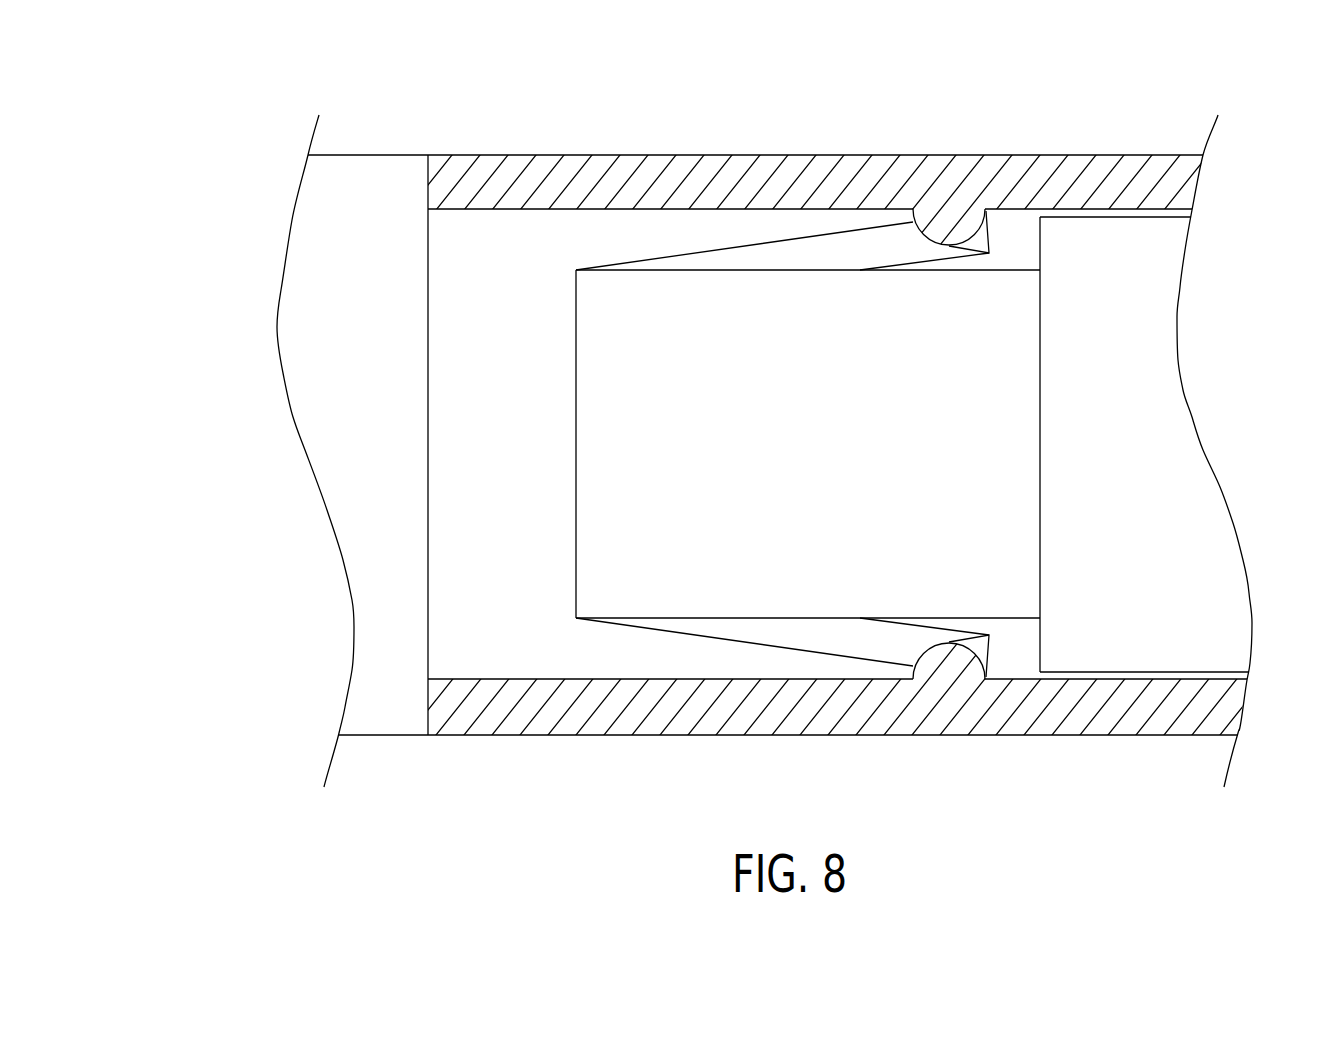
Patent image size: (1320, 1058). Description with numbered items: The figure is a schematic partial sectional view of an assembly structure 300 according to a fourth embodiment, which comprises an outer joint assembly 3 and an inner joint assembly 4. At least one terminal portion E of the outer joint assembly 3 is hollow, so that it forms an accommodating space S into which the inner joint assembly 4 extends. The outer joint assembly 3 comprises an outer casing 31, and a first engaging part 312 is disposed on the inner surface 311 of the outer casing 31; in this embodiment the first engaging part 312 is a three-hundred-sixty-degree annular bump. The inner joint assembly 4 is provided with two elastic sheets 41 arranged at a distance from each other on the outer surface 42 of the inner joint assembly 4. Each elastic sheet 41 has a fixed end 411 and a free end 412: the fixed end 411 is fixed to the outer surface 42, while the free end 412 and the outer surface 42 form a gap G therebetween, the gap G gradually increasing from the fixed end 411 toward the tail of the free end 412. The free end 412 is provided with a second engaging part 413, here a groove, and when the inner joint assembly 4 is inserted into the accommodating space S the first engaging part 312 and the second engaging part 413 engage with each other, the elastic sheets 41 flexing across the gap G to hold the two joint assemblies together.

The assembly structure 300 is at (206, 62).
The outer joint assembly 3 is at (777, 431).
The outer casing 31 is at (743, 178).
The inner surface 311 is at (530, 212).
The first engaging part 312 is at (952, 230).
The inner joint assembly 4 is at (912, 382).
The elastic sheet 41 is at (782, 444).
The fixed end 411 is at (753, 257).
The free end 412 is at (943, 253).
The second engaging part 413 is at (960, 244).
The outer surface 42 is at (1018, 270).
The accommodating space S is at (497, 430).
The gap G is at (993, 260).
The terminal portion E is at (1178, 187).